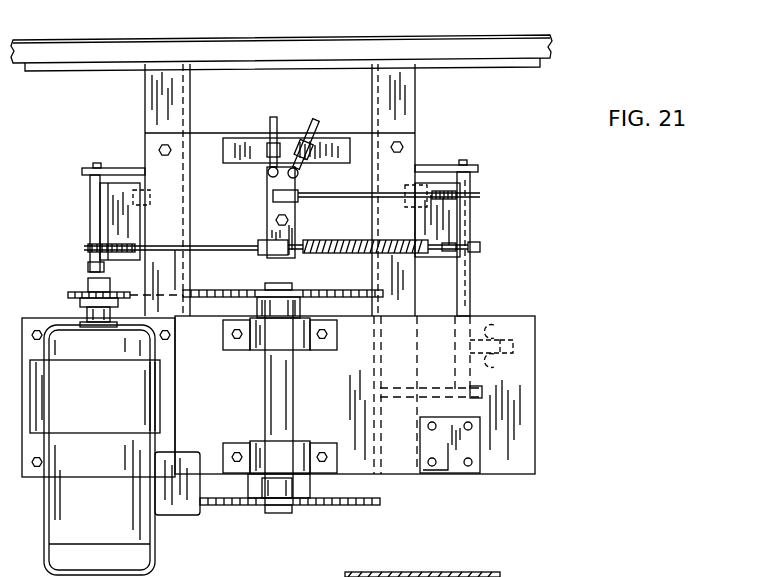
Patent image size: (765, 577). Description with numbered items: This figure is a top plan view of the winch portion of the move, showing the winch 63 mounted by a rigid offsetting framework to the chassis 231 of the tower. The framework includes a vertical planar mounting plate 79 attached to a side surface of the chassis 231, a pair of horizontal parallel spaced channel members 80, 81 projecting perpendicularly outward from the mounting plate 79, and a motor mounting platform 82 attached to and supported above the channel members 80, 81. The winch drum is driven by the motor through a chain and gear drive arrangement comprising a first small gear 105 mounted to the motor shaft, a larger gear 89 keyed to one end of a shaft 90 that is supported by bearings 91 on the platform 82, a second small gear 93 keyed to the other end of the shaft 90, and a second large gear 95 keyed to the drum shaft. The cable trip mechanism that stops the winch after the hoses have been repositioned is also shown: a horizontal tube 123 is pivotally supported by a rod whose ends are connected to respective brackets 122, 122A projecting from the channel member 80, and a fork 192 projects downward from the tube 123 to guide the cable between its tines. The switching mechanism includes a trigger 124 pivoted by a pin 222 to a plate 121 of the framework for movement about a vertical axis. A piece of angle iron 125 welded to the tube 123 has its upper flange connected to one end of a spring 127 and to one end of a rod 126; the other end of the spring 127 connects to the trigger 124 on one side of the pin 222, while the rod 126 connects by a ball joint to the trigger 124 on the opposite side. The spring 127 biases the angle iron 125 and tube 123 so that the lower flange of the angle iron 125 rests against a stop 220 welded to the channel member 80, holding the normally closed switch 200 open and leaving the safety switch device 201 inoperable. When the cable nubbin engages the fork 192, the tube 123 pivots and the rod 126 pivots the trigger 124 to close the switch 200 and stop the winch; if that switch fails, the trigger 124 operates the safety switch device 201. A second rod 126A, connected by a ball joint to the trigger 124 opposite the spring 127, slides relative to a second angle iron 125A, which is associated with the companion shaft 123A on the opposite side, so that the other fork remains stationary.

The chassis 231 is at (553, 52).
The vertical planar mounting plate 79 is at (490, 68).
The channel member 81 is at (153, 97).
The channel member 80 is at (412, 95).
The plate 121 is at (222, 133).
The normally closed switch 200 is at (263, 135).
The safety switch device 201 is at (304, 124).
The rod 126 is at (351, 189).
The rod 126A is at (207, 247).
The pin 222 is at (277, 218).
The trigger 124 is at (296, 230).
The spring 127 is at (352, 254).
The left shaft 123A is at (90, 267).
The stop 220 is at (90, 205).
The angle iron 125A is at (100, 222).
The first small gear 105 is at (80, 293).
The motor mounting platform 82 is at (363, 462).
The bracket 122 is at (482, 390).
The fork 192 is at (503, 333).
The shaft 90 is at (293, 417).
The bearings 91 is at (260, 443).
The larger gear 89 is at (220, 291).
The second large gear 95 is at (382, 505).
The second small gear 93 is at (300, 506).
The winch 63 is at (256, 516).
The bracket 122A is at (473, 170).
The angle iron 125 is at (470, 232).
The horizontal tube 123 is at (470, 290).